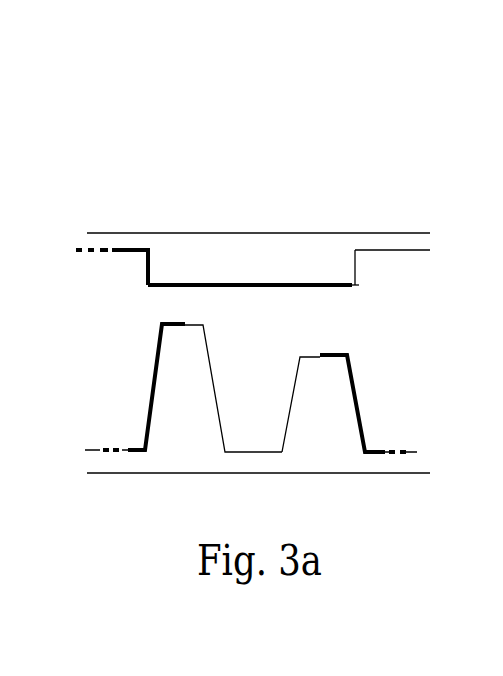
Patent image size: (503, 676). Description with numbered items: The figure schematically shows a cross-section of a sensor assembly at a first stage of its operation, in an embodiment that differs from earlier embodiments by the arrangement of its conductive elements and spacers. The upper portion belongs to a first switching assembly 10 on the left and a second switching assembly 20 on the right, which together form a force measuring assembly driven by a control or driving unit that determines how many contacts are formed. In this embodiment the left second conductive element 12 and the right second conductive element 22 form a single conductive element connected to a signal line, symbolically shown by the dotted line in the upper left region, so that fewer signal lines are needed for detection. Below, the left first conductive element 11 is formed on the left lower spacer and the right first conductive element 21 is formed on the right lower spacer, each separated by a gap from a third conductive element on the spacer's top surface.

The first switching assembly 10 is at (160, 221).
The second switching assembly 20 is at (322, 222).
The left second conductive element 12 is at (177, 284).
The right second conductive element 22 is at (340, 286).
The left first conductive element 11 is at (152, 380).
The right first conductive element 21 is at (348, 358).